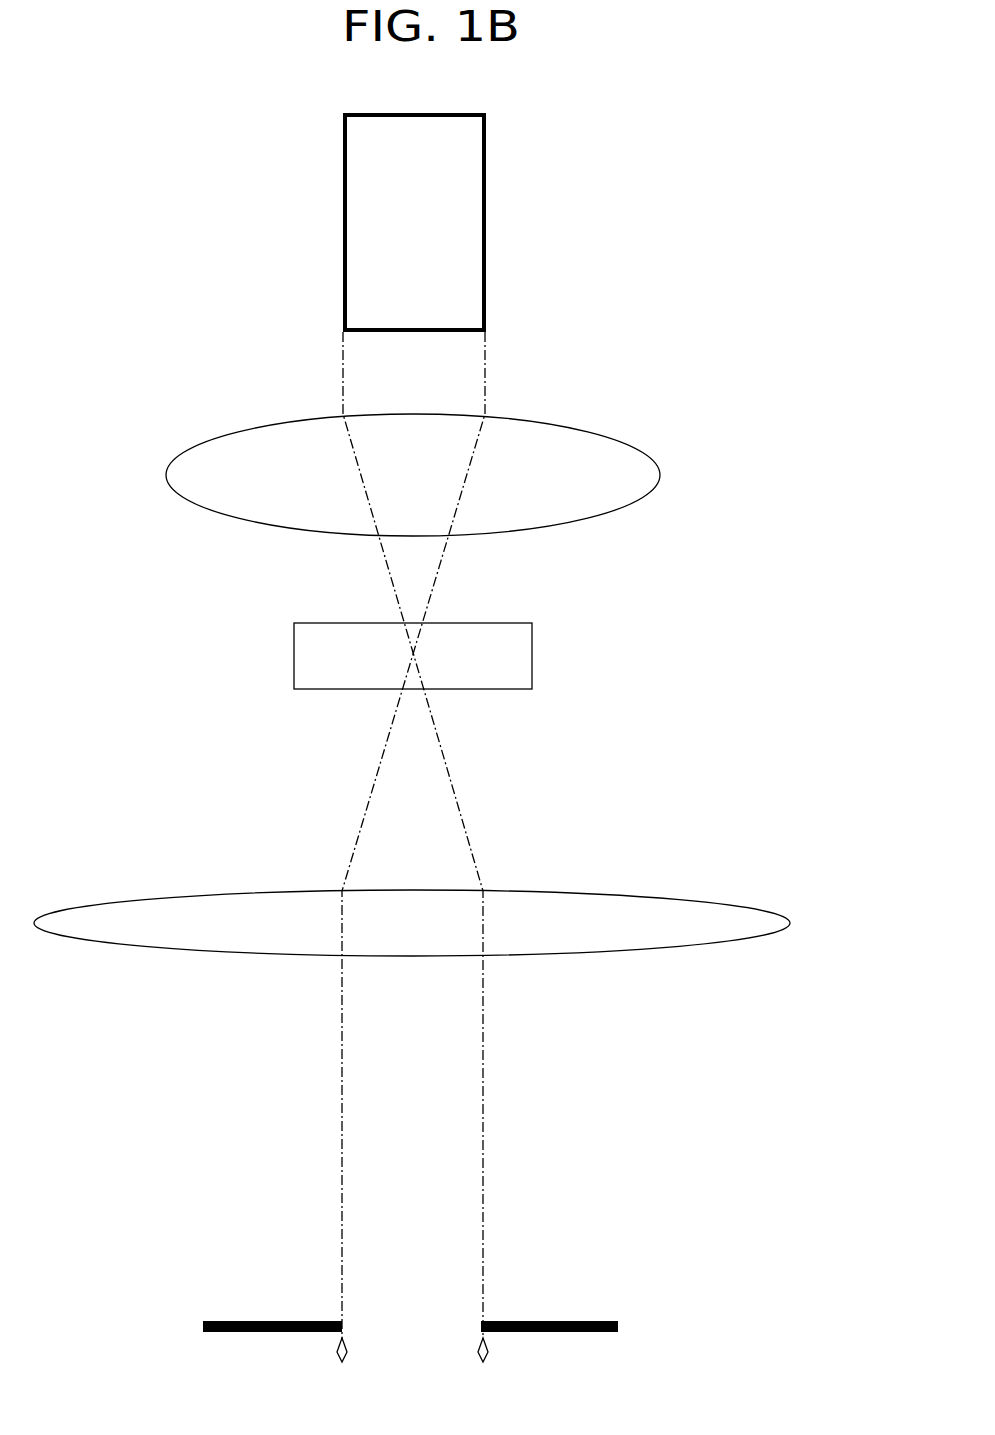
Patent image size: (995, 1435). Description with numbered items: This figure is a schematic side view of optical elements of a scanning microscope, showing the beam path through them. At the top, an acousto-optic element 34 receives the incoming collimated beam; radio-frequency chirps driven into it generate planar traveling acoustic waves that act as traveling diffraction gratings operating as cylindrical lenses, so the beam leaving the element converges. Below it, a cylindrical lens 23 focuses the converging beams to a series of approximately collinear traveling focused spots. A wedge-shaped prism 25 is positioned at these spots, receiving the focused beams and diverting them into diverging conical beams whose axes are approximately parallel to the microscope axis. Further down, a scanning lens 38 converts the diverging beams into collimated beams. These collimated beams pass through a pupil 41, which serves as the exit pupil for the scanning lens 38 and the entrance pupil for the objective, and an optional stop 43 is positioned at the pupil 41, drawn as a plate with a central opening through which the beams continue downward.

The acousto-optic element 34 is at (486, 240).
The cylindrical lens 23 is at (658, 490).
The wedge-shaped prism 25 is at (532, 652).
The scanning lens 38 is at (635, 894).
The pupil 41 is at (525, 1262).
The stop 43 is at (583, 1320).